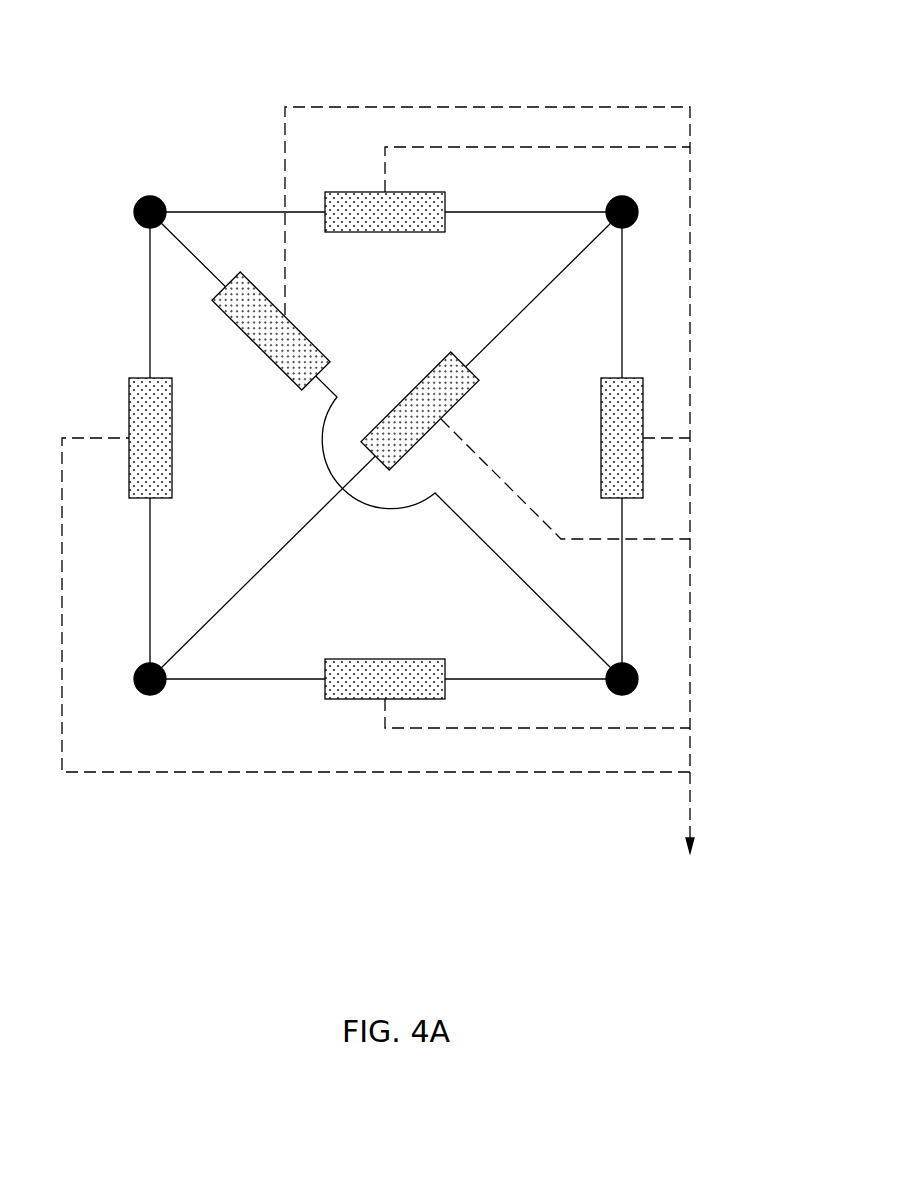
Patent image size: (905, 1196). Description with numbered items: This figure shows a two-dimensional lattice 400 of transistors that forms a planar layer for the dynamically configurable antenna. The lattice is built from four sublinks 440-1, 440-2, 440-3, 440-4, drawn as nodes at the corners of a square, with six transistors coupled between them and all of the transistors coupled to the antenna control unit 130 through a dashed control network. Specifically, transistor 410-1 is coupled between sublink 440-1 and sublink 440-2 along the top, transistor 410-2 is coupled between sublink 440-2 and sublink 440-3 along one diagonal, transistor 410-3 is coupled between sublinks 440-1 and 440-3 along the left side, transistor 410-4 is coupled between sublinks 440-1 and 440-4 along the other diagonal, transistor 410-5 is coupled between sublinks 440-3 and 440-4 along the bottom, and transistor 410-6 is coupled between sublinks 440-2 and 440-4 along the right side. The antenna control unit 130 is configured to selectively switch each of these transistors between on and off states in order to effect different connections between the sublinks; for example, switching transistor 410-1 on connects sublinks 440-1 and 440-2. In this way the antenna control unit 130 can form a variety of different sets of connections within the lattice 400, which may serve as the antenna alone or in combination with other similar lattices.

The 2D lattice 400 is at (533, 62).
The transistor 410-1 is at (365, 233).
The transistor 410-2 is at (430, 378).
The transistor 410-3 is at (172, 418).
The transistor 410-4 is at (248, 338).
The transistor 410-5 is at (365, 659).
The transistor 410-6 is at (601, 438).
The sublink 440-1 is at (150, 196).
The sublink 440-2 is at (620, 196).
The sublink 440-3 is at (148, 695).
The sublink 440-4 is at (618, 694).
The antenna control unit 130 is at (690, 874).